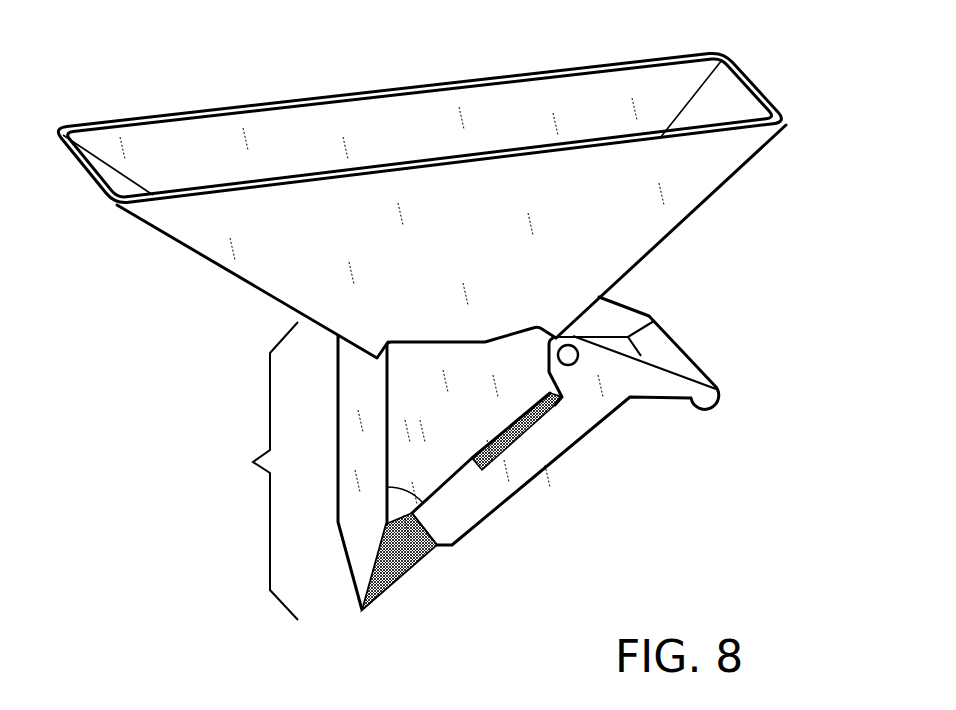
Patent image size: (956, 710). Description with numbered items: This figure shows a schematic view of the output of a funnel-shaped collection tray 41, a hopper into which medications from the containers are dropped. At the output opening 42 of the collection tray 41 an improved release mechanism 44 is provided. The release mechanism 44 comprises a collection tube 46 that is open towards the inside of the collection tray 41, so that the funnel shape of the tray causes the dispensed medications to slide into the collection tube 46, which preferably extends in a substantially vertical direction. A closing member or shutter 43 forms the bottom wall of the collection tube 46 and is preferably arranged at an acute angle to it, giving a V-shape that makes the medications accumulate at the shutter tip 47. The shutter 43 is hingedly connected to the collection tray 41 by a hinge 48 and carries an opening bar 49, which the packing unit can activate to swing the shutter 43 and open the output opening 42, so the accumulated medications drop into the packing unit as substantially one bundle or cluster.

The collection tray 41 is at (747, 97).
The output opening 42 is at (490, 522).
The closing member 43 is at (545, 421).
The release mechanism 44 is at (290, 471).
The collection tube 46 is at (430, 507).
The shutter tip 47 is at (388, 577).
The hinge 48 is at (568, 352).
The opening bar 49 is at (708, 396).